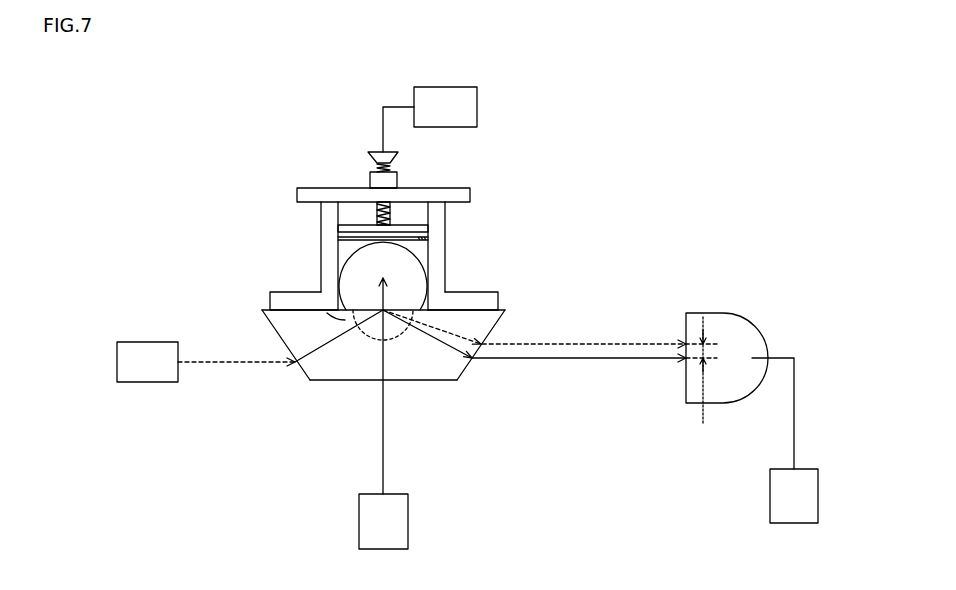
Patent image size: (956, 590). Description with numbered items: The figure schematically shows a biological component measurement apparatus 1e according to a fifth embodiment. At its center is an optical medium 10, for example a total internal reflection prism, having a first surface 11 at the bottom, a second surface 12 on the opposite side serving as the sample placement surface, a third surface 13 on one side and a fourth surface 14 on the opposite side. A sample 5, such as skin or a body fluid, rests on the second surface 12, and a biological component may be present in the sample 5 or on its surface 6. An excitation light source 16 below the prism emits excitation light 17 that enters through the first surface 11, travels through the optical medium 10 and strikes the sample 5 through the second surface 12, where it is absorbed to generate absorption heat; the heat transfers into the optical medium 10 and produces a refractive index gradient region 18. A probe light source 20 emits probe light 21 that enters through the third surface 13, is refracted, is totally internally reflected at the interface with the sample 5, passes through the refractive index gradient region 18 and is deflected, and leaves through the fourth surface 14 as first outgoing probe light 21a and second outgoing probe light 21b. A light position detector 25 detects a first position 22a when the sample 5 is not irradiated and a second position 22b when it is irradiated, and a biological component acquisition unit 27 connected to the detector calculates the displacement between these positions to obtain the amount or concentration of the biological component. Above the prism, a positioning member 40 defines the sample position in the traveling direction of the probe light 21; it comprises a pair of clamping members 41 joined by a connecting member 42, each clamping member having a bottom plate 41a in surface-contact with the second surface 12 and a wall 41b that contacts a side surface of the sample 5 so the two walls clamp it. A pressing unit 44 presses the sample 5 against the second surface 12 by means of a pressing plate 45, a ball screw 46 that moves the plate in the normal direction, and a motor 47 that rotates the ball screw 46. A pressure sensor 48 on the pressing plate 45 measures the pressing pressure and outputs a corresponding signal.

The biological component measurement apparatus 1e is at (804, 106).
The sample 5 is at (353, 252).
The surface of sample 6 is at (327, 313).
The optical medium 10 is at (322, 382).
The first surface 11 is at (436, 382).
The second surface 12 is at (506, 310).
The third surface 13 is at (271, 324).
The fourth surface 14 is at (500, 318).
The excitation light source 16 is at (408, 527).
The excitation light 17 is at (385, 447).
The refractive index gradient region 18 is at (363, 341).
The probe light source 20 is at (155, 342).
The probe light 21 is at (223, 366).
The first outgoing probe light 21a is at (602, 360).
The second outgoing probe light 21b is at (612, 342).
The first position 22a is at (683, 362).
The second position 22b is at (683, 342).
The light position detector 25 is at (705, 313).
The biological component acquisition unit 27 is at (770, 502).
The positioning member 40 is at (158, 177).
The clamping members 41 is at (196, 225).
The bottom plate 41a is at (288, 300).
The wall 41b is at (330, 248).
The connecting member 42 is at (355, 196).
The pressing unit 44 is at (532, 92).
The pressing plate 45 is at (420, 229).
The ball screw 46 is at (398, 165).
The motor 47 is at (477, 107).
The pressure sensor 48 is at (430, 240).